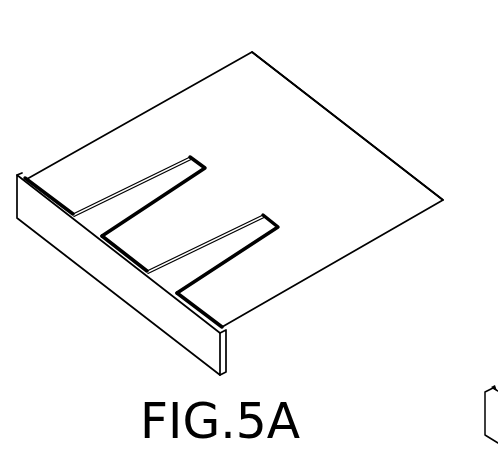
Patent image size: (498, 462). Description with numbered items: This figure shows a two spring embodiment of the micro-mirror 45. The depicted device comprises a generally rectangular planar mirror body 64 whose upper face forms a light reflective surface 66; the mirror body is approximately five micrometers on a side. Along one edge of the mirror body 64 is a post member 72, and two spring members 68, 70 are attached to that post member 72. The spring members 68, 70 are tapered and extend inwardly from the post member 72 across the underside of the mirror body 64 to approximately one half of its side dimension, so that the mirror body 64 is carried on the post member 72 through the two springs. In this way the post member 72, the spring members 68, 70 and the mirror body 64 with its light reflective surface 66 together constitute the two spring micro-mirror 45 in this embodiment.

The two spring micro-mirror 45 is at (132, 105).
The mirror body 64 is at (343, 257).
The light reflective surface 66 is at (335, 128).
The spring member 68 is at (172, 173).
The spring member 70 is at (247, 231).
The post member 72 is at (228, 346).